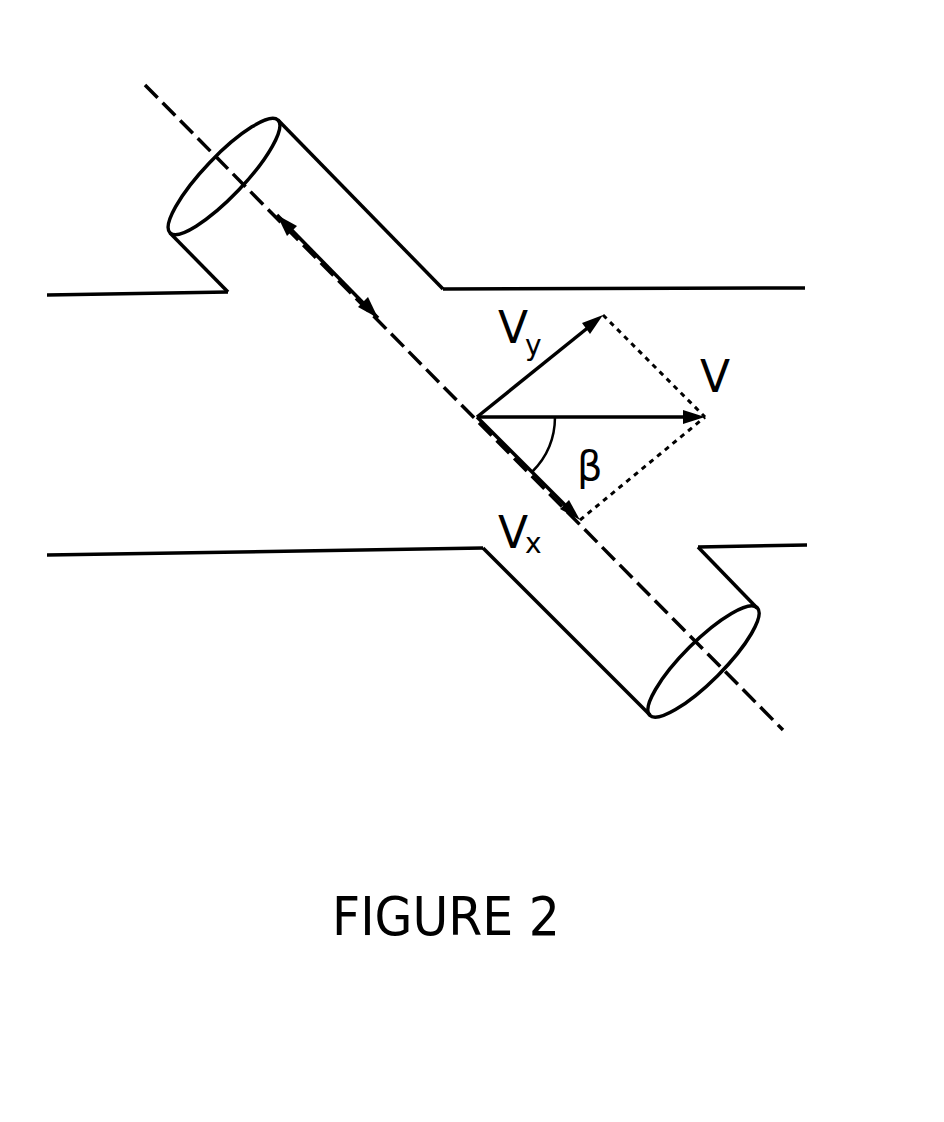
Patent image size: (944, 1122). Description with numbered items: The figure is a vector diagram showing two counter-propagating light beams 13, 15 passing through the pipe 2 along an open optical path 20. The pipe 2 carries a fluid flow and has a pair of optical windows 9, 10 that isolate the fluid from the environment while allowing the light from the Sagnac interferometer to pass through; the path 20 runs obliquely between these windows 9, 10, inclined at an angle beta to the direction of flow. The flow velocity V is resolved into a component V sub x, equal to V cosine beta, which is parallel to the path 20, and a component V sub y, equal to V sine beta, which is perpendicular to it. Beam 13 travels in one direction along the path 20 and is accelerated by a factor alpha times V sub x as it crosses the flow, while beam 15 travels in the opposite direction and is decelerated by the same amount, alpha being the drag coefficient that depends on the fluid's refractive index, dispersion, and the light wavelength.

The pipe 2 is at (645, 288).
The optical window 9 is at (277, 117).
The optical window 10 is at (757, 605).
The beam 13 is at (375, 315).
The beam 15 is at (277, 212).
The open optical path 20 is at (663, 610).